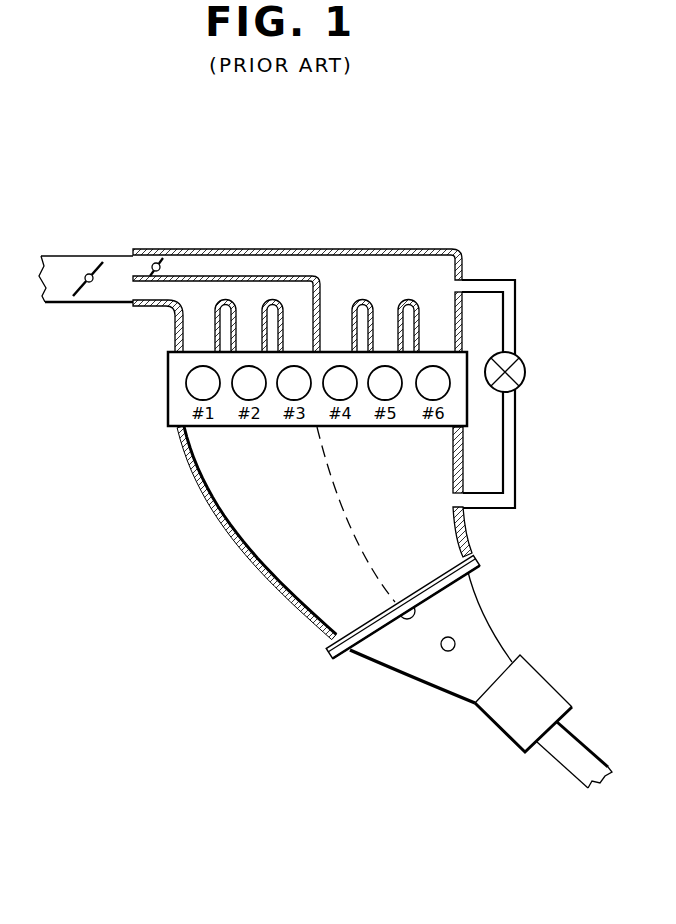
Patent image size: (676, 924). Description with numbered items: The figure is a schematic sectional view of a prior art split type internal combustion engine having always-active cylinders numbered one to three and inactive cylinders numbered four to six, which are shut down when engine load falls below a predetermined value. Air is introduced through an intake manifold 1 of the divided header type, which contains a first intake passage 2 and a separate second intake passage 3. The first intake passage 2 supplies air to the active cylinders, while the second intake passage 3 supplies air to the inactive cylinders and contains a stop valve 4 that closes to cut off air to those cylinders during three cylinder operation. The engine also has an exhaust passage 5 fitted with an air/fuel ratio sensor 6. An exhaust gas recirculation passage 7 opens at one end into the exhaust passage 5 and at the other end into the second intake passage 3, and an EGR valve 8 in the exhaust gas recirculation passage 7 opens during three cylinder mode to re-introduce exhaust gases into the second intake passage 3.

The intake manifold 1 is at (320, 248).
The first intake passage 2 is at (258, 293).
The second intake passage 3 is at (407, 265).
The stop valve 4 is at (152, 265).
The exhaust passage 5 is at (477, 597).
The air/fuel ratio sensor 6 is at (455, 644).
The exhaust gas recirculation passage 7 is at (515, 313).
The EGR valve 8 is at (526, 375).